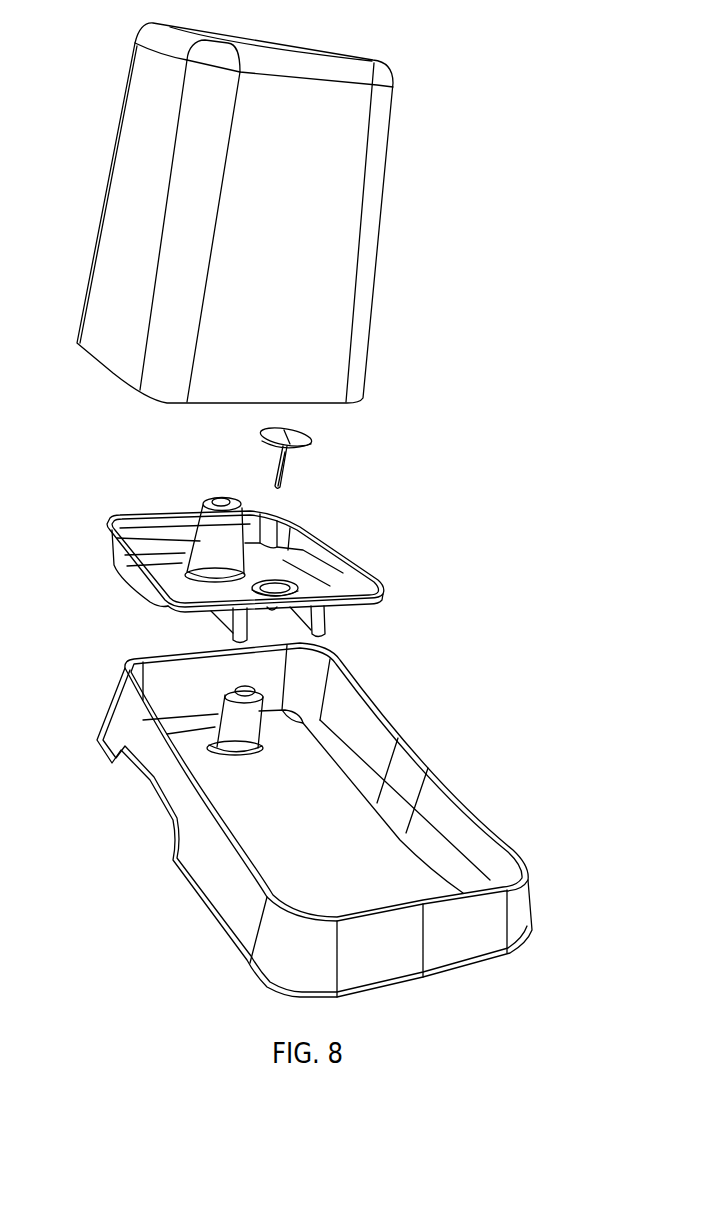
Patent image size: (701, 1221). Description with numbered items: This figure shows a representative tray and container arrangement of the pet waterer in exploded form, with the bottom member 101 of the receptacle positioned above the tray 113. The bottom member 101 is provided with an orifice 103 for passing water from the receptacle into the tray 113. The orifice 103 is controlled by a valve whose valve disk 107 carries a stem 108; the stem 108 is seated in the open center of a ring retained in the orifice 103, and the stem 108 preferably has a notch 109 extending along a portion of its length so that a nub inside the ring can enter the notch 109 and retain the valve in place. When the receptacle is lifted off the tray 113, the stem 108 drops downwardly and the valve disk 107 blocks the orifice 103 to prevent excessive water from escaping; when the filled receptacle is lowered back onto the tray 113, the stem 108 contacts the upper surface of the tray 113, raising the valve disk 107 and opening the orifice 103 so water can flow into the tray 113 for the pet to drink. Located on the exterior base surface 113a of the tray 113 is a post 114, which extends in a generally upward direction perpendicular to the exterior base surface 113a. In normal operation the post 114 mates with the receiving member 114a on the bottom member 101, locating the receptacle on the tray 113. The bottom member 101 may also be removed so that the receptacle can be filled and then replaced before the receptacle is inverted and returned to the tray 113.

The bottom member 101 is at (107, 524).
The orifice 103 is at (365, 594).
The valve disk 107 is at (263, 432).
The stem 108 is at (280, 465).
The notch 109 is at (288, 472).
The tray 113 is at (493, 823).
The exterior base surface 113a is at (283, 877).
The post 114 is at (213, 707).
The receiving member 114a is at (200, 505).